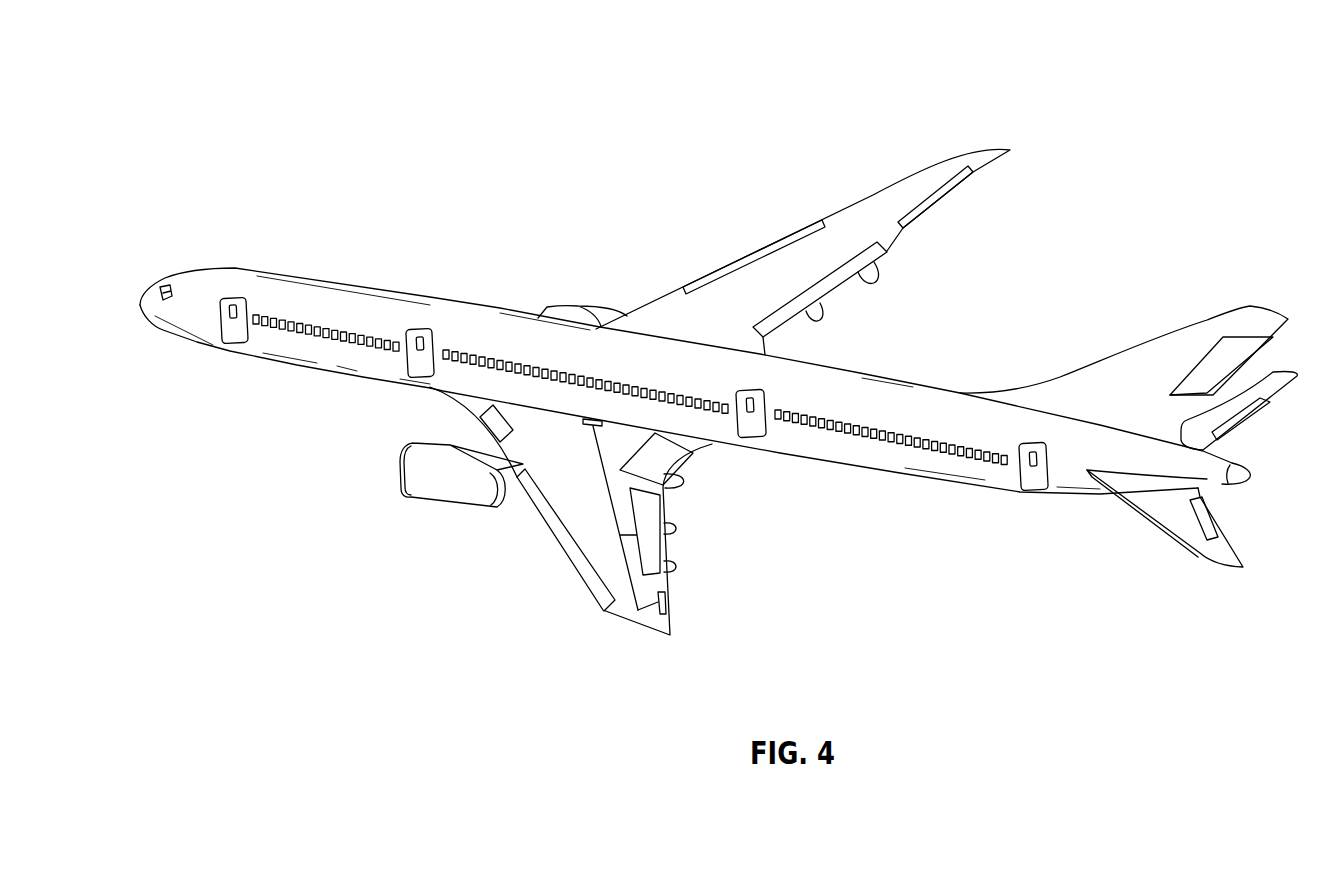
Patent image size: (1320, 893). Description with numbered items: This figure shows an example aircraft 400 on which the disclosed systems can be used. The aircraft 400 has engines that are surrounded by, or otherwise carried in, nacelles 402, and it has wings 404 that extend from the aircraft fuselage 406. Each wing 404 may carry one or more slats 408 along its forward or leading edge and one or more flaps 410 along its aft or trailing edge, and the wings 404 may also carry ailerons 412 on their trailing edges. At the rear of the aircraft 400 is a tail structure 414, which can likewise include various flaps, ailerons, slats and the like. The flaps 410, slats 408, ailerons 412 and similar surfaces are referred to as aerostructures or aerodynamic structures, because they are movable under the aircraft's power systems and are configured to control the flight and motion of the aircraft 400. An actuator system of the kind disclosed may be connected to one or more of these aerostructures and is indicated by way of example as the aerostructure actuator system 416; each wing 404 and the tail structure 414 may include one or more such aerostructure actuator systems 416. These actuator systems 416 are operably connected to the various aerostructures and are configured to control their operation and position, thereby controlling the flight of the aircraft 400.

The aircraft 400 is at (1167, 94).
The nacelles 402 is at (565, 310).
The wings 404 is at (885, 198).
The aircraft fuselage 406 is at (412, 305).
The slats 408 is at (818, 232).
The flaps 410 is at (845, 290).
The ailerons 412 is at (945, 203).
The tail structure 414 is at (1149, 530).
The aerostructure actuator system 416 is at (596, 467).